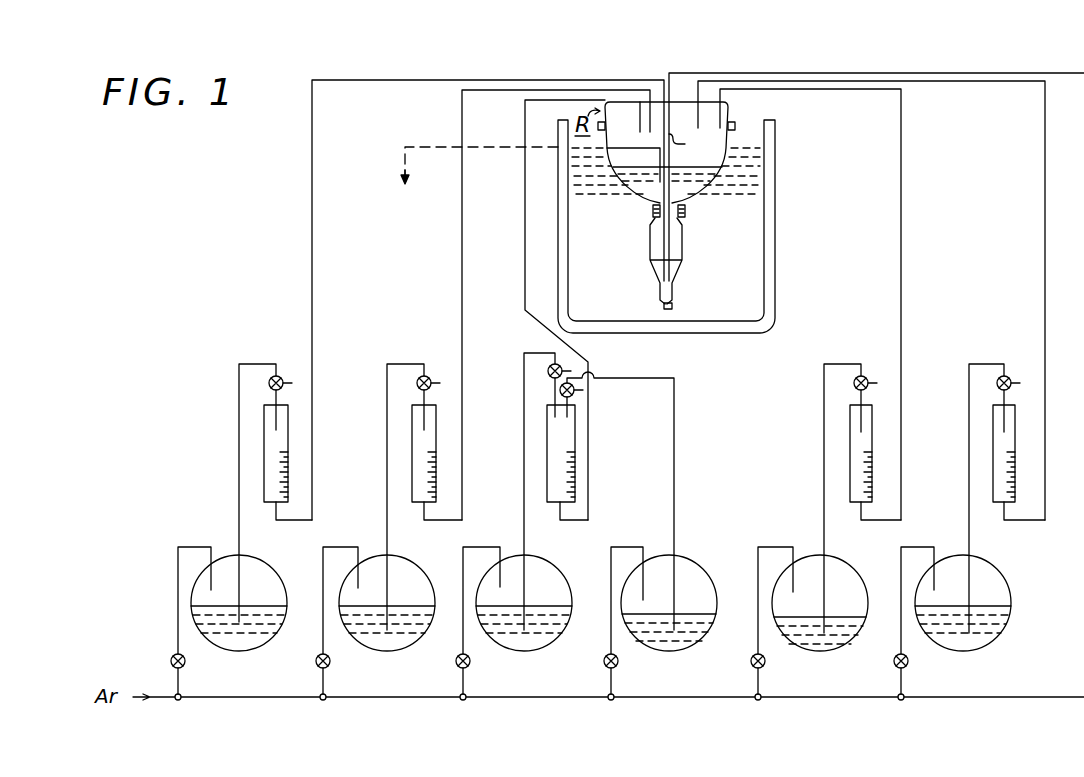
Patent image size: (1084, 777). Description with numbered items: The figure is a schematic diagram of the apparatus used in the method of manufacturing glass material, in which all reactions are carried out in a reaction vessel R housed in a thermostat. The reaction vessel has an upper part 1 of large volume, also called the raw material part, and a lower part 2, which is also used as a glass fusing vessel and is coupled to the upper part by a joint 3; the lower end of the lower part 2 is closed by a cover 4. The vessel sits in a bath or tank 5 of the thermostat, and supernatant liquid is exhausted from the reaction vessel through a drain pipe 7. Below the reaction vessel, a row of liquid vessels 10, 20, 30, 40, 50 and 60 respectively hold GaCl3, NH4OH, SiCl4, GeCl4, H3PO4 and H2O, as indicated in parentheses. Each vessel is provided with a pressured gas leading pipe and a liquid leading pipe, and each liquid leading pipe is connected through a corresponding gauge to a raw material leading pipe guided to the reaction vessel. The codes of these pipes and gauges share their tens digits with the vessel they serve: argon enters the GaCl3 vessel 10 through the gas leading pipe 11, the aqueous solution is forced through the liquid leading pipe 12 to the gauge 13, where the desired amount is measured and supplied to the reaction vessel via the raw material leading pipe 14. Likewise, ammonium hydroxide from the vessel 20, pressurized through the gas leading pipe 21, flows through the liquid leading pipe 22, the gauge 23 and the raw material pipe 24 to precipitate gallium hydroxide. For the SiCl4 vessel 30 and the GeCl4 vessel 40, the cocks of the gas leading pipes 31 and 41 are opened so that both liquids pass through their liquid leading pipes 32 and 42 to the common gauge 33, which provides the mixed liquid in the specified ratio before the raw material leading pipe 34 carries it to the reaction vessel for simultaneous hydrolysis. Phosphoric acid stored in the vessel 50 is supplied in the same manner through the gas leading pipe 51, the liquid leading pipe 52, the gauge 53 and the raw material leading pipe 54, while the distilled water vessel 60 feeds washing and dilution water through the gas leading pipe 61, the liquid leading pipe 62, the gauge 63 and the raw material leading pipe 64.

The upper part 1 is at (737, 106).
The lower part 2 is at (684, 243).
The joint 3 is at (652, 212).
The cover 4 is at (673, 307).
The water bath tank 5 is at (776, 157).
The drain pipe 7 is at (428, 145).
The GaCl3 vessel 10 is at (268, 647).
The gas leading pipe 11 is at (191, 545).
The liquid leading pipe 12 is at (240, 485).
The gauge 13 is at (265, 456).
The raw material leading pipe 14 is at (540, 80).
The raw material vessel 20 is at (416, 647).
The gas leading pipe 21 is at (358, 545).
The liquid leading pipe 22 is at (387, 477).
The gauge 23 is at (413, 452).
The raw material pipe 24 is at (497, 95).
The SiCl4 raw material vessel 30 is at (553, 647).
The gas leading pipe 31 is at (499, 545).
The liquid leading pipe 32 is at (524, 472).
The gauge 33 is at (548, 500).
The raw material leading pipe 34 is at (547, 100).
The GeCl4 raw material vessel 40 is at (698, 647).
The gas leading pipe 41 is at (645, 533).
The liquid leading pipe 42 is at (674, 482).
The raw material vessel 50 is at (850, 645).
The gas leading pipe 51 is at (793, 545).
The liquid leading pipe 52 is at (824, 447).
The gauge 53 is at (879, 452).
The raw material leading pipe 54 is at (886, 92).
The distilled water vessel 60 is at (996, 634).
The gas leading pipe 61 is at (936, 532).
The liquid leading pipe 62 is at (969, 494).
The gauge 63 is at (1013, 470).
The raw material leading pipe 64 is at (1025, 84).